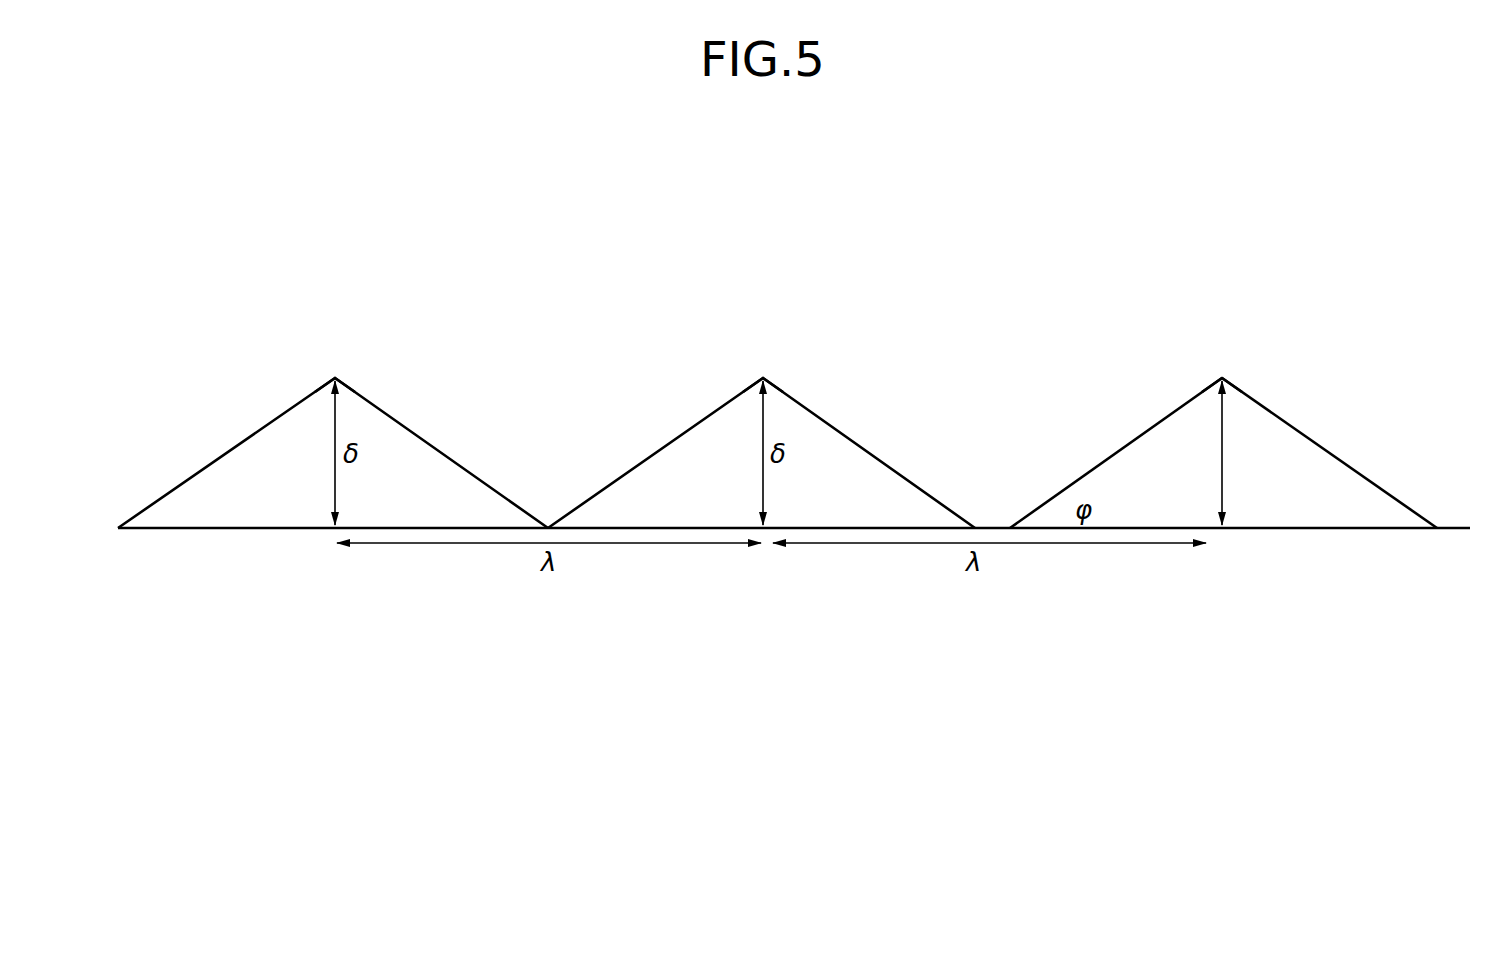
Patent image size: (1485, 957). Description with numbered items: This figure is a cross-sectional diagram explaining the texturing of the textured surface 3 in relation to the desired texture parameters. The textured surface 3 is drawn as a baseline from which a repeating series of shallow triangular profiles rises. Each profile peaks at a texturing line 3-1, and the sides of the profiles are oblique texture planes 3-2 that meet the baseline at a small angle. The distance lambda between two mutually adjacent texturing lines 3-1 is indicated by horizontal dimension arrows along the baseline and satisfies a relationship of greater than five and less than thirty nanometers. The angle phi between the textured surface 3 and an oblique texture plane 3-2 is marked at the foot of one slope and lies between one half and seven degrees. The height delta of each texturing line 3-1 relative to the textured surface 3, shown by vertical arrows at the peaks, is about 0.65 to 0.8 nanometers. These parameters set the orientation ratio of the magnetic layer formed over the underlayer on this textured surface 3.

The textured surface 3 is at (794, 425).
The texturing line 3-1 is at (335, 378).
The oblique texture plane 3-2 is at (653, 454).